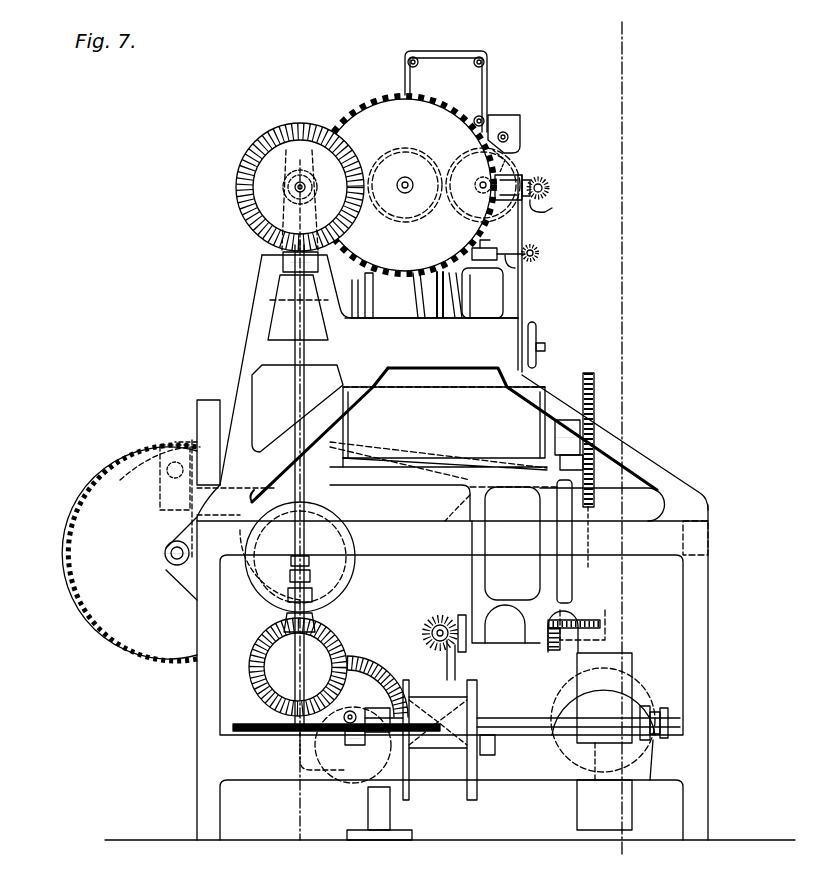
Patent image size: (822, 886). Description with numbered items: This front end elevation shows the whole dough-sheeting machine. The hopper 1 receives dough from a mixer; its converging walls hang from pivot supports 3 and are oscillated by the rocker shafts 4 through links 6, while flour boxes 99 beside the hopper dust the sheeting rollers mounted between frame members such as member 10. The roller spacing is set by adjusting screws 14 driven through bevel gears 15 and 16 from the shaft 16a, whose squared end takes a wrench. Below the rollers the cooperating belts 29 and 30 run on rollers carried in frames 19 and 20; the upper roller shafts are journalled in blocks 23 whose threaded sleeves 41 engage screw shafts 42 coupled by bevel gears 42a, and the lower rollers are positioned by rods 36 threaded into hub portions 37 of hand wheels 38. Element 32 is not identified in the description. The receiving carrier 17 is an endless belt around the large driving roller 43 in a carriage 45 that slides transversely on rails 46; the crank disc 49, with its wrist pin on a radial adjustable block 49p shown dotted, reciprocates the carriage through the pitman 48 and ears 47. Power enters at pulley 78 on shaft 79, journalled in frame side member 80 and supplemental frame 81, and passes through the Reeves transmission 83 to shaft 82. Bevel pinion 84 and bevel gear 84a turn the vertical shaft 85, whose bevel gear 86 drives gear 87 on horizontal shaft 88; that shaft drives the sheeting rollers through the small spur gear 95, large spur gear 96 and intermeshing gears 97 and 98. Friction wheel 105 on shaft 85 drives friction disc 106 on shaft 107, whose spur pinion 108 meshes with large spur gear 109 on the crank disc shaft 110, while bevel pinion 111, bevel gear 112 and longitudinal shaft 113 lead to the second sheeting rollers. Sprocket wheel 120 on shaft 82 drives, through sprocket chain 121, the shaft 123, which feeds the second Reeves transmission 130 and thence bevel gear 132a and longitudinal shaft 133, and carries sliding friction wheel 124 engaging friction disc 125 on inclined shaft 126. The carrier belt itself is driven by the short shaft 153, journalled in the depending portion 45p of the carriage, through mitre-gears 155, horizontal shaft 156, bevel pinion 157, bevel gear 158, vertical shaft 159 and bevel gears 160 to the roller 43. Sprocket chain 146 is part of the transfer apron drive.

The hopper 1 is at (420, 79).
The pivot supports 3 is at (411, 58).
The rocker shafts 4 is at (477, 116).
The links 6 is at (600, 26).
The frame member 10 is at (523, 292).
The adjusting screws 14 is at (512, 178).
The bevel gear 15 is at (530, 184).
The bevel gear 16 is at (548, 189).
The shaft 16a is at (548, 211).
The receiving carrier 17 is at (440, 385).
The frame 19 is at (450, 299).
The frame 20 is at (425, 302).
The block 23 is at (472, 300).
The belt 29 is at (462, 318).
The belt 30 is at (415, 320).
The roller 32 is at (438, 320).
The rods 36 is at (545, 347).
The hub portions 37 is at (520, 345).
The adjusting hand wheels 38 is at (536, 327).
The internally threaded sleeves 41 is at (488, 250).
The screw shafts 42 is at (516, 268).
The bevel gears 42a is at (540, 242).
The large driving roller 43 is at (347, 458).
The carriage 45 is at (478, 478).
The depending portion 45p is at (535, 573).
The rails 46 is at (632, 492).
The ears 47 is at (447, 523).
The pitman 48 is at (285, 478).
The crank disc 49 is at (172, 440).
The radial adjustable block 49p is at (154, 477).
The pulley 78 is at (632, 655).
The lower horizontal shaft 79 is at (652, 770).
The frame side member 80 is at (708, 792).
The central supplemental supporting frame 81 is at (368, 815).
The shaft 82 is at (495, 750).
The Reeves variable speed transmission 83 is at (440, 690).
The bevel pinion 84 is at (345, 745).
The bevel gear 84a is at (300, 733).
The vertical shaft 85 is at (295, 394).
The bevel gear 86 is at (283, 249).
The gear 87 is at (243, 207).
The horizontal shaft 88 is at (294, 187).
The small spur gear 95 is at (296, 172).
The large spur gear 96 is at (368, 124).
The gear 97 is at (405, 150).
The gear 98 is at (505, 170).
The flour boxes 99 is at (515, 124).
The friction wheel 105 is at (314, 595).
The friction disc 106 is at (312, 578).
The horizontal shaft 107 is at (340, 539).
The spur pinion 108 is at (310, 562).
The large spur gear 109 is at (90, 478).
The shaft 110 is at (165, 560).
The bevel pinion 111 is at (270, 610).
The bevel gear 112 is at (255, 672).
The longitudinal shaft 113 is at (318, 622).
The sprocket wheel 120 is at (560, 718).
The sprocket chain 121 is at (530, 700).
The shaft 123 is at (605, 735).
The sliding friction wheel 124 is at (655, 708).
The friction disc 125 is at (635, 690).
The inclined shaft 126 is at (635, 740).
The second Reeves variable speed transmission 130 is at (455, 660).
The bevel gear 132a is at (375, 662).
The longitudinal shaft 133 is at (353, 710).
The sprocket chain 146 is at (598, 383).
The short shaft 153 is at (428, 622).
The mitre-gears 155 is at (460, 616).
The horizontal shaft 156 is at (518, 638).
The bevel pinion 157 is at (556, 650).
The bevel gear 158 is at (578, 628).
The vertical shaft 159 is at (572, 585).
The bevel gears 160 is at (560, 445).